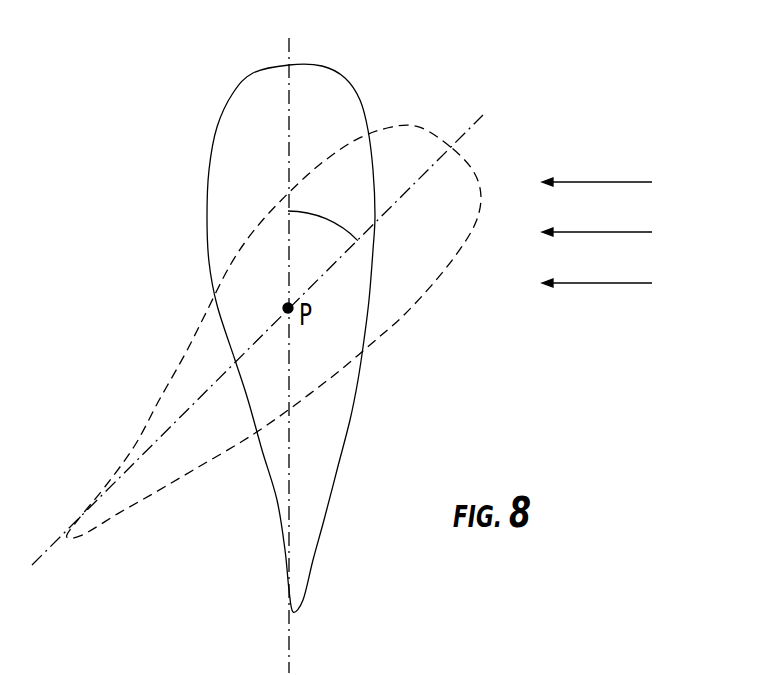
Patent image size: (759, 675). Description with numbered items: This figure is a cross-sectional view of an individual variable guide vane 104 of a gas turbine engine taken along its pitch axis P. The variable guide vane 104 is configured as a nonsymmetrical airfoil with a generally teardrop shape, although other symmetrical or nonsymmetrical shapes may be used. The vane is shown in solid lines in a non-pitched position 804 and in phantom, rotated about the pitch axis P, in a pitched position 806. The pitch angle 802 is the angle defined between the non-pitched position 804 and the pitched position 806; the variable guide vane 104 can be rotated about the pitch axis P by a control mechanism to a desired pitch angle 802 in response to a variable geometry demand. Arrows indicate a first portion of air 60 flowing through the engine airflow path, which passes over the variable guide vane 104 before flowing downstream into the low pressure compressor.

The variable guide vane 104 is at (226, 557).
The non-pitched position 804 is at (290, 339).
The pitched position 806 is at (274, 325).
The pitch angle 802 is at (341, 226).
The first portion of air 60 is at (633, 232).